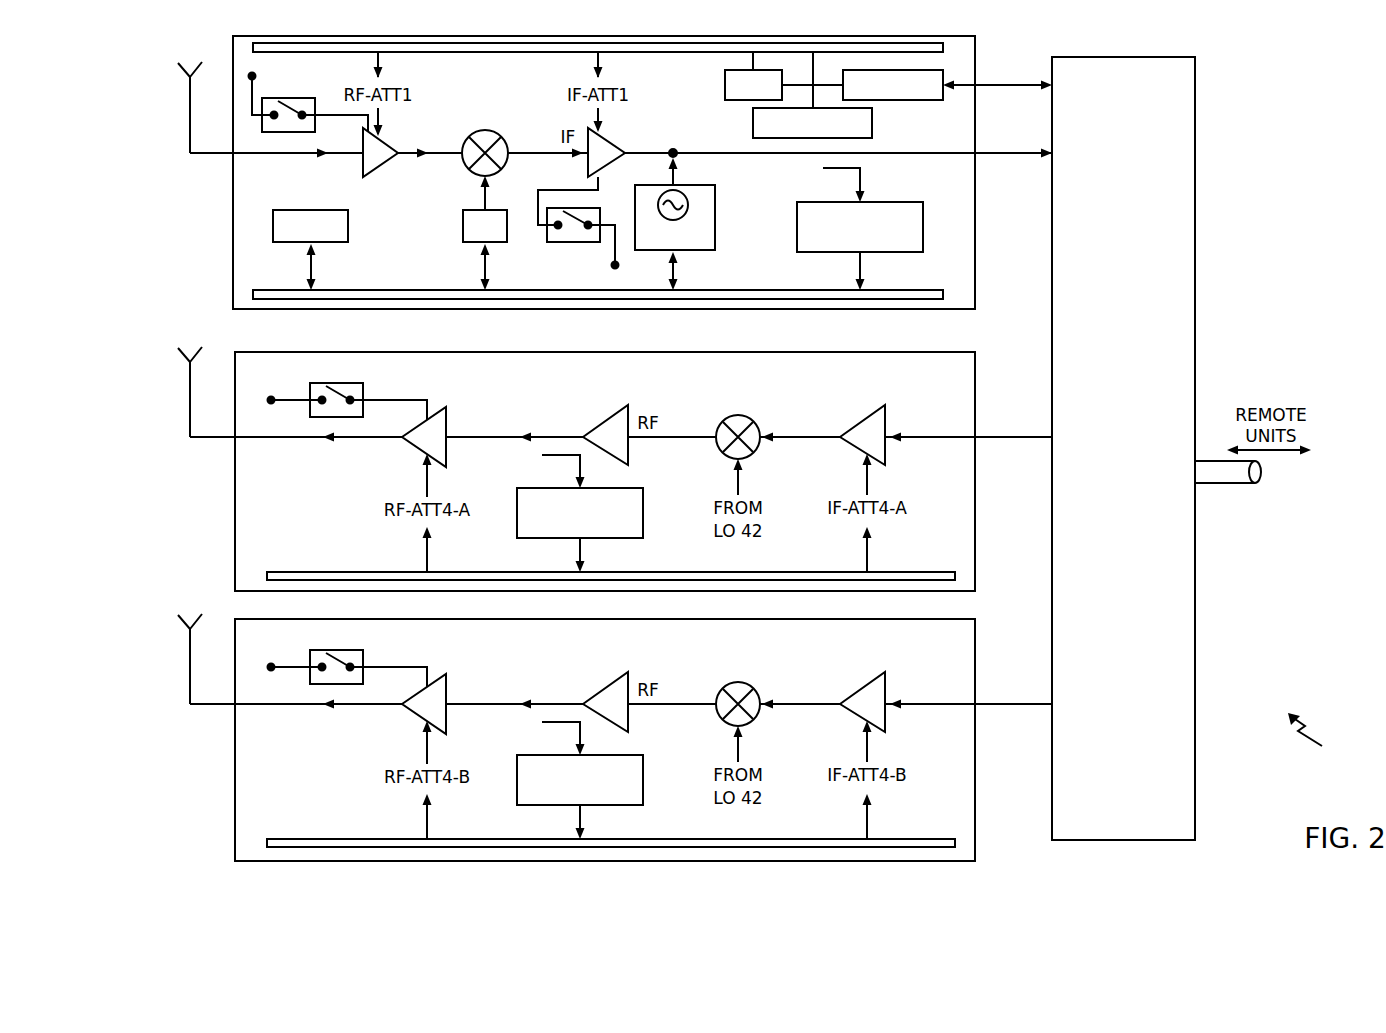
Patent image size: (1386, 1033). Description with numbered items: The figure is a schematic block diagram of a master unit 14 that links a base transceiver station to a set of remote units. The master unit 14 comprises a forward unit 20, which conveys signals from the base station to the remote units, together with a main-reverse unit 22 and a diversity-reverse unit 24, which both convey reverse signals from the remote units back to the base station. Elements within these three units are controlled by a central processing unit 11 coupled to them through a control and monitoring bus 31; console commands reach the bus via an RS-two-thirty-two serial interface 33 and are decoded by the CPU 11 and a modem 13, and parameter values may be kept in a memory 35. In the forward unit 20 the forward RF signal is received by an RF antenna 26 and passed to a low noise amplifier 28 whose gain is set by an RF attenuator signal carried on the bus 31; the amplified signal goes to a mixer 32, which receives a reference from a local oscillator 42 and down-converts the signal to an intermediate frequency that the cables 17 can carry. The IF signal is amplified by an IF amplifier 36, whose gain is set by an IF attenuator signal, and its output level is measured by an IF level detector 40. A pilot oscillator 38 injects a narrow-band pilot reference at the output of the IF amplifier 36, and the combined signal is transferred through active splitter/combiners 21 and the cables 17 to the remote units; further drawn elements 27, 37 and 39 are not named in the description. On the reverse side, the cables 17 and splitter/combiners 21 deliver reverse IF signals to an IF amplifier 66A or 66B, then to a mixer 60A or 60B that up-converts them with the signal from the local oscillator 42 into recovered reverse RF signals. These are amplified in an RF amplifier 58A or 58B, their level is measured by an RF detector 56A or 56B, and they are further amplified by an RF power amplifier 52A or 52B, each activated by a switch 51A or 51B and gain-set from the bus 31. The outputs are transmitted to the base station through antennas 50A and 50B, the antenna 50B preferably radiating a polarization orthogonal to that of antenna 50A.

The central processing unit 11 is at (725, 83).
The modem 13 is at (925, 100).
The master unit 14 is at (1318, 740).
The cables 17 is at (1223, 483).
The forward unit 20 is at (233, 262).
The active splitter/combiners 21 is at (1147, 57).
The main-reverse unit 22 is at (235, 540).
The diversity-reverse unit 24 is at (577, 740).
The RF antenna 26 is at (180, 69).
The switch 27 is at (275, 100).
The low noise amplifier 28 is at (378, 172).
The control and monitoring bus 31 is at (448, 52).
The mixer 32 is at (485, 130).
The RS-232 interface 33 is at (297, 210).
The memory 35 is at (872, 125).
The IF amplifier 36 is at (613, 137).
The signal node 37 is at (673, 148).
The pilot oscillator 38 is at (690, 250).
The switch 39 is at (580, 243).
The IF level detector 40 is at (883, 202).
The local oscillator 42 is at (472, 247).
The antenna 50A is at (181, 354).
The antenna 50B is at (164, 658).
The switch 51A is at (363, 389).
The switch 51B is at (349, 658).
The RF power amplifier 52A is at (412, 449).
The RF power amplifier 52B is at (399, 710).
The RF detector 56A is at (608, 538).
The RF detector 56B is at (592, 780).
The RF amplifier 58A is at (612, 412).
The RF amplifier 58B is at (588, 693).
The mixer 60A is at (740, 412).
The mixer 60B is at (719, 687).
The IF amplifier 66A is at (867, 412).
The IF amplifier 66B is at (845, 693).